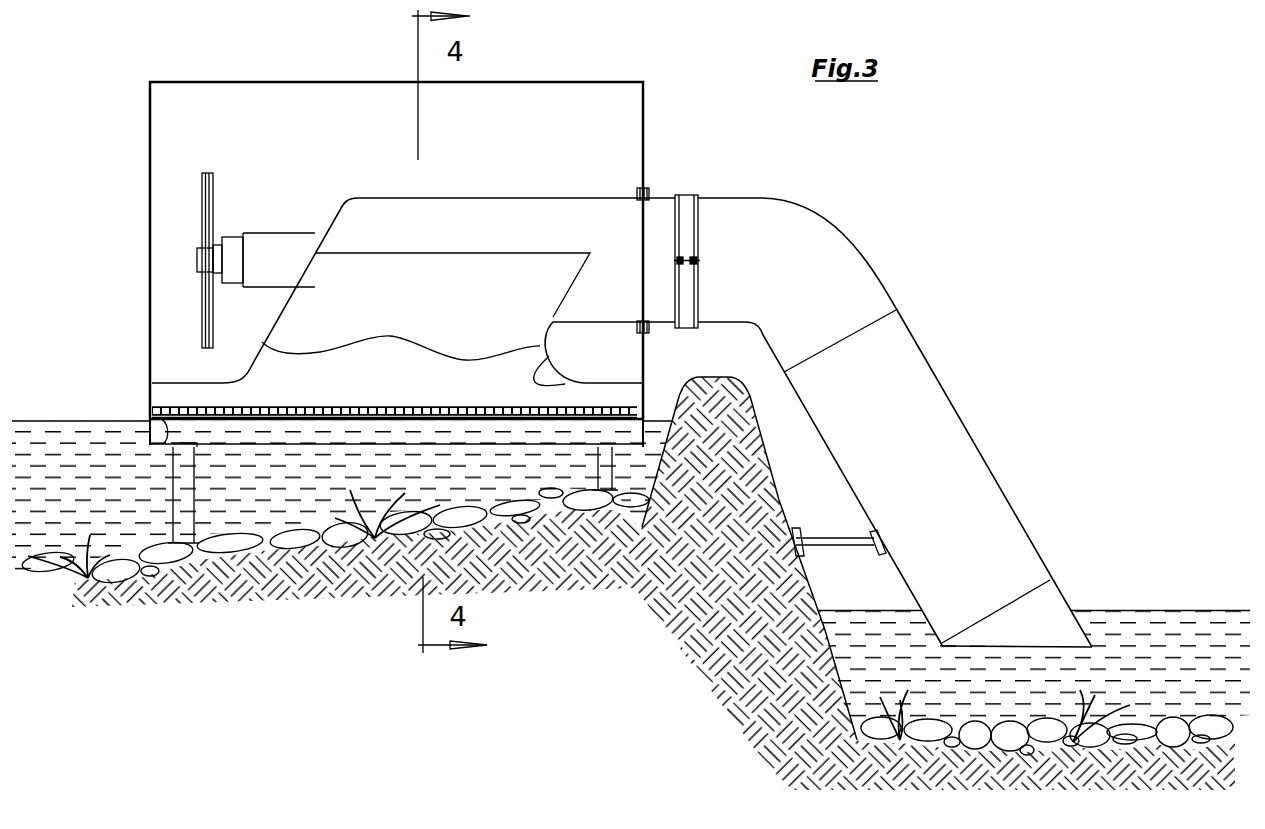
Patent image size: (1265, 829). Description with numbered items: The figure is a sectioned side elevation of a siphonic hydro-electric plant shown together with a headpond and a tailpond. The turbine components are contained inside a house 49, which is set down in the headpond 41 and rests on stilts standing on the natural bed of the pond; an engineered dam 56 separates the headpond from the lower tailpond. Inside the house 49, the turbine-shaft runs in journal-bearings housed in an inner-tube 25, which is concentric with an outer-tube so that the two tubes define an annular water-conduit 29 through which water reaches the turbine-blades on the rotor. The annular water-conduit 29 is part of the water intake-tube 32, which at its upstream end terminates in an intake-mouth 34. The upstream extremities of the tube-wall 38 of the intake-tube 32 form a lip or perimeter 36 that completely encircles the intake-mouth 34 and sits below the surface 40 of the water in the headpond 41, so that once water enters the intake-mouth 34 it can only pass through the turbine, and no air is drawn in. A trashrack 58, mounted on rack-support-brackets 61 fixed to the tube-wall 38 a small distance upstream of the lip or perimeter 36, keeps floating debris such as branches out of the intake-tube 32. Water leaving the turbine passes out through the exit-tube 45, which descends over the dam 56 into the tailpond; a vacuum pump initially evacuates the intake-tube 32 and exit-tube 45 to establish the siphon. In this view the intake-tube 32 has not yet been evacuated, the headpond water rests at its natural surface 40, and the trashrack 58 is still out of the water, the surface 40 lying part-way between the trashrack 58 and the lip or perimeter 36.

The inner-tube 25 is at (282, 243).
The annular water-conduit 29 is at (490, 198).
The water intake-tube 32 is at (471, 324).
The intake-mouth 34 is at (264, 442).
The lip or perimeter 36 is at (468, 446).
The tube-wall 38 is at (238, 378).
The surface 40 is at (110, 421).
The headpond 41 is at (40, 455).
The exit-tube 45 is at (945, 428).
The house 49 is at (312, 82).
The dam 56 is at (738, 486).
The trashrack 58 is at (344, 407).
The rack-support-brackets 61 is at (166, 447).